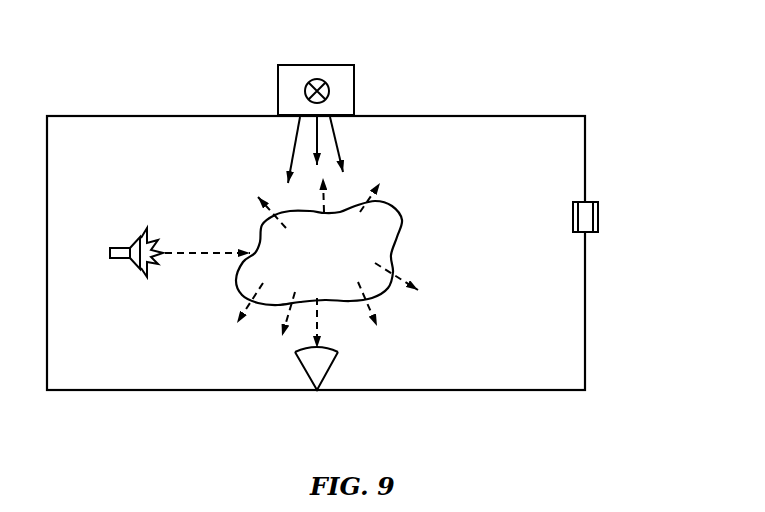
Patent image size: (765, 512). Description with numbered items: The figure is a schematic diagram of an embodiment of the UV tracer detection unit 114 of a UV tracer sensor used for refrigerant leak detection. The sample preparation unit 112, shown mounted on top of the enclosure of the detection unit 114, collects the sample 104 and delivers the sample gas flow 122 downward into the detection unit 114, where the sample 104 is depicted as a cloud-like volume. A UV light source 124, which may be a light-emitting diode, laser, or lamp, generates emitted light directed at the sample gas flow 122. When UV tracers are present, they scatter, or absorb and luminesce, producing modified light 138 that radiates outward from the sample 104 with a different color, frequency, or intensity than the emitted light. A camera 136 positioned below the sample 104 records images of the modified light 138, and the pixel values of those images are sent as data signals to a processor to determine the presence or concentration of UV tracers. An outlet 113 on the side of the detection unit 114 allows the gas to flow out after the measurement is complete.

The sample 104 is at (386, 202).
The sample preparation unit 112 is at (355, 88).
The outlet 113 is at (598, 215).
The UV tracer detection unit 114 is at (480, 64).
The sample gas flow 122 is at (291, 150).
The UV light source 124 is at (118, 247).
The camera 136 is at (330, 368).
The modified light 138 is at (325, 202).